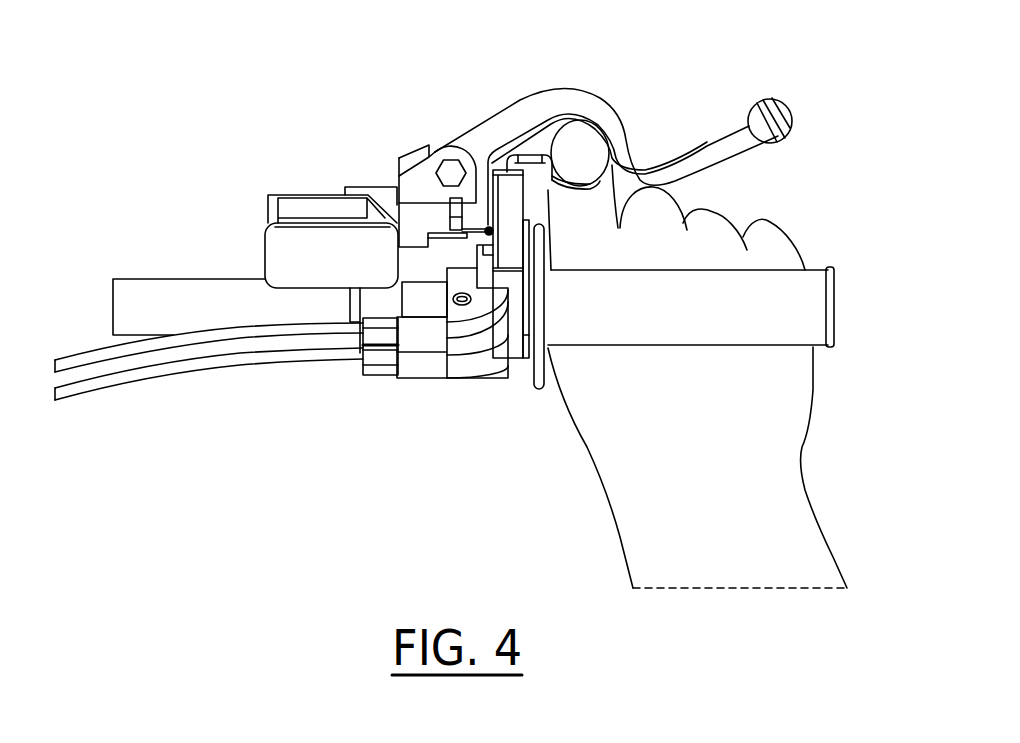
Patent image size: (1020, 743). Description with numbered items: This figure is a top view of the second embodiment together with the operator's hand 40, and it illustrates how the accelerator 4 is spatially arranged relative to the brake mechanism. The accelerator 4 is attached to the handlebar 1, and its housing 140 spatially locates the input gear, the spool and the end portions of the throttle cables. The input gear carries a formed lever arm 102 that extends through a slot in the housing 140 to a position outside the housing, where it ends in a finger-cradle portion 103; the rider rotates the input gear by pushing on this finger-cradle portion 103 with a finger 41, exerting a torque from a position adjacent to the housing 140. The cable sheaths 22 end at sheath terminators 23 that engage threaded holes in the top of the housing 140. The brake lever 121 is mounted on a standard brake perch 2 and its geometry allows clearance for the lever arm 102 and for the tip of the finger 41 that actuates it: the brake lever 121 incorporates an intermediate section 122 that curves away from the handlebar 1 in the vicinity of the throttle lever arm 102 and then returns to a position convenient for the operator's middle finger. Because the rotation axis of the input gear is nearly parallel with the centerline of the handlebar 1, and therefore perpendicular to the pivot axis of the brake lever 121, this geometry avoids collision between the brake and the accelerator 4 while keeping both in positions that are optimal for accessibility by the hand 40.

The handlebar 1 is at (158, 297).
The brake perch 2 is at (302, 247).
The brake lever 121 is at (479, 135).
The lever arm 102 is at (540, 160).
The intermediate section 122 is at (617, 85).
The finger 41 is at (580, 160).
The finger-cradle portion 103 is at (605, 172).
The cable sheaths 22 is at (140, 350).
The sheath terminators 23 is at (378, 376).
The housing 140 is at (480, 362).
The accelerator 4 is at (511, 392).
The operator's hand 40 is at (618, 433).